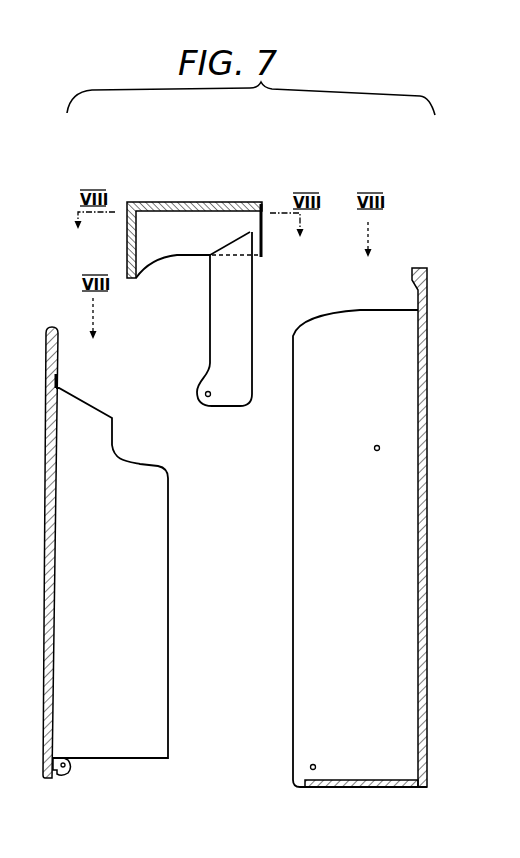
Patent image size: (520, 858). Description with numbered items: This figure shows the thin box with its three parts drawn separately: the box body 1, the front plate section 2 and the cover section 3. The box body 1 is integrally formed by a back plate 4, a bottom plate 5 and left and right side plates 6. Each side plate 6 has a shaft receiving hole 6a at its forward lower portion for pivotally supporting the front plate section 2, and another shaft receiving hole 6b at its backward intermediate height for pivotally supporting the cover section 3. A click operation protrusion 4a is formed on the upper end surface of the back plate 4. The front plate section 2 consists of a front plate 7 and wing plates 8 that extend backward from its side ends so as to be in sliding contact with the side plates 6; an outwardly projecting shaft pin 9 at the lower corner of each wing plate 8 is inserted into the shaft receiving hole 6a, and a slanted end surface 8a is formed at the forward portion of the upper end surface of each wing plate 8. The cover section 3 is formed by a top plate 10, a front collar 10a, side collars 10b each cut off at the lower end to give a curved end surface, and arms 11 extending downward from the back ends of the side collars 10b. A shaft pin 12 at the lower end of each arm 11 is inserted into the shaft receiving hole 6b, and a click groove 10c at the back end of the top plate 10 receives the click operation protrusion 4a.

The box body 1 is at (360, 533).
The front plate section 2 is at (42, 390).
The cover section 3 is at (182, 277).
The back plate 4 is at (420, 522).
The click operation protrusion 4a is at (417, 263).
The bottom plate 5 is at (355, 787).
The side plate 6 is at (300, 495).
The shaft receiving hole 6a is at (316, 762).
The shaft receiving hole 6b is at (376, 441).
The front plate 7 is at (45, 534).
The wing plate 8 is at (157, 593).
The slanted end surface 8a is at (92, 403).
The shaft pin 9 is at (66, 768).
The top plate 10 is at (164, 202).
The front collar 10a is at (127, 246).
The side collar 10b is at (167, 250).
The click groove 10c is at (247, 203).
The arm 11 is at (248, 306).
The shaft pin 12 is at (209, 398).